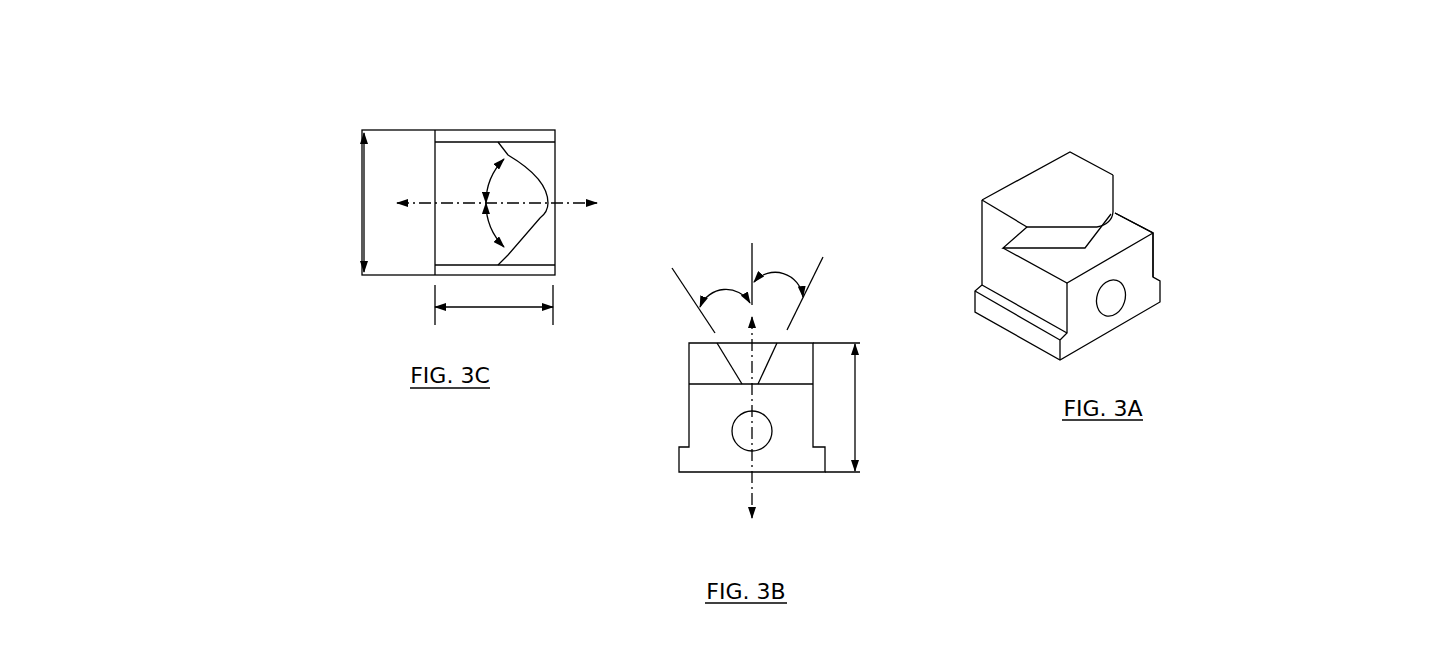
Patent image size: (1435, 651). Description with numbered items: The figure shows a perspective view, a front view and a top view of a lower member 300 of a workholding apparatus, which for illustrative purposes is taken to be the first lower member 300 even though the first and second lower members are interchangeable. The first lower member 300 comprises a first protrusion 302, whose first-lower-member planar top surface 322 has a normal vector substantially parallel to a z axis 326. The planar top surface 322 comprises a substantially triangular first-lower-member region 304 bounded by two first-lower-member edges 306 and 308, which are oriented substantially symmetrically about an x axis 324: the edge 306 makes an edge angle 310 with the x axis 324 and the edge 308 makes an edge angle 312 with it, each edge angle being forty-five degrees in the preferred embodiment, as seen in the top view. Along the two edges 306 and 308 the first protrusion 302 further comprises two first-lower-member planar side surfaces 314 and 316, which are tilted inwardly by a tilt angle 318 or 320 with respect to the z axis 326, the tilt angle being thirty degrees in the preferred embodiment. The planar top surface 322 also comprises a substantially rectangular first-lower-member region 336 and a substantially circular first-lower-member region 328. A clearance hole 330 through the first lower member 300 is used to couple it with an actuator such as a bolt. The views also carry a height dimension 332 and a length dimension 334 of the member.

In FIG. 3A, the first lower member 300 is at (1282, 145).
In FIG. 3A, the first protrusion 302 is at (1092, 162).
In FIG. 3A, the substantially triangular first-lower-member region 304 is at (1095, 205).
In FIG. 3A, the first-lower-member edge 306 is at (1115, 200).
In FIG. 3A, the first-lower-member edge 308 is at (1055, 227).
In FIG. 3C, the edge angle 310 is at (504, 158).
In FIG. 3C, the edge angle 312 is at (503, 247).
In FIG. 3B, the first-lower-member planar side surface 314 is at (768, 370).
In FIG. 3B, the first-lower-member planar side surface 316 is at (728, 367).
In FIG. 3B, the tilt angle 318 is at (787, 268).
In FIG. 3B, the tilt angle 320 is at (728, 288).
In FIG. 3A, the first-lower-member planar top surface 322 is at (1060, 192).
In FIG. 3C, the x axis 324 is at (567, 200).
In FIG. 3B, the z axis 326 is at (752, 482).
In FIG. 3C, the substantially circular first-lower-member region 328 is at (533, 195).
In FIG. 3C, the clearance hole 330 is at (363, 212).
In FIG. 3B, the clearance hole 330 is at (752, 431).
In FIG. 3A, the clearance hole 330 is at (1108, 302).
In FIG. 3B, the height dimension 332 is at (857, 430).
In FIG. 3C, the length dimension 334 is at (530, 303).
In FIG. 3C, the substantially rectangular first-lower-member region 336 is at (448, 167).